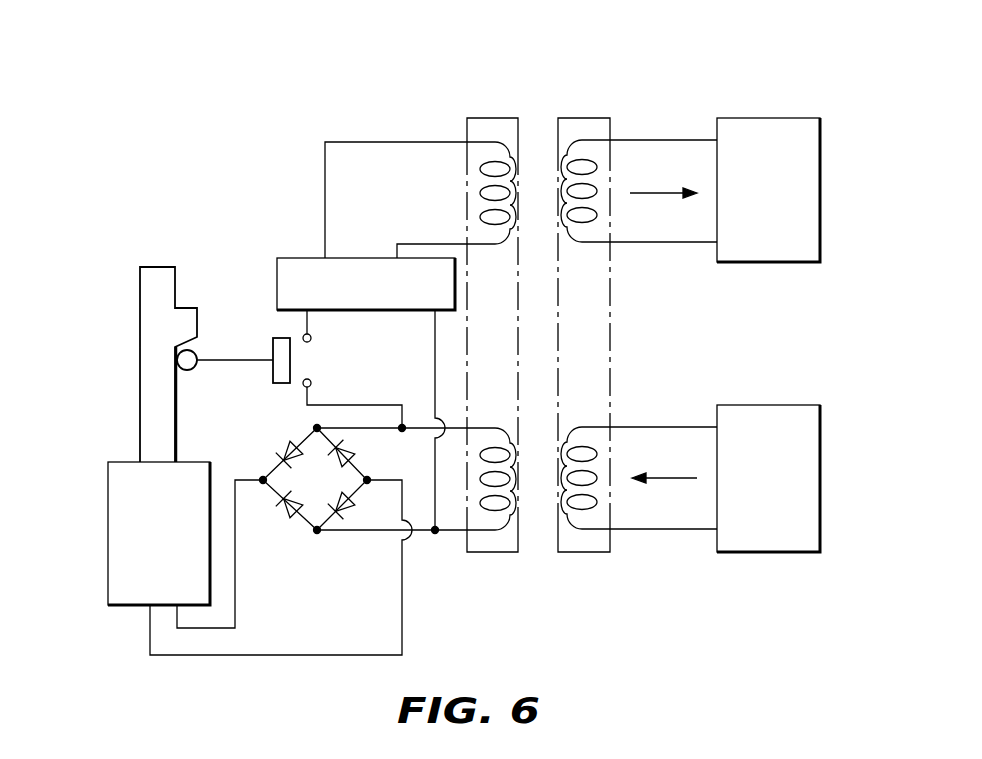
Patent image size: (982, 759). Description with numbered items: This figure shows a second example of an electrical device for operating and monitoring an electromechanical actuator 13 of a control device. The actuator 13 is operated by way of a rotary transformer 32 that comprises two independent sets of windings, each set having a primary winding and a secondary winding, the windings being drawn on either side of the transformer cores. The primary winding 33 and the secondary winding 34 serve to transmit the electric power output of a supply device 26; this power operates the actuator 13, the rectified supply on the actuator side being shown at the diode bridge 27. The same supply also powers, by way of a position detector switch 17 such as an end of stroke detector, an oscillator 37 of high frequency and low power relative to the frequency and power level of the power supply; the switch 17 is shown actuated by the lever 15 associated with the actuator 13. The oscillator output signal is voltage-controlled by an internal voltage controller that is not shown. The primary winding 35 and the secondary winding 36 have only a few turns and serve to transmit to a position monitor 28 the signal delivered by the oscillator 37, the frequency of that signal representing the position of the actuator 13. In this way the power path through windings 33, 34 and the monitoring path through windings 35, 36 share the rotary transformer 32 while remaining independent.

The actuator 13 is at (112, 525).
The lever 15 is at (170, 425).
The position detector switch 17 is at (278, 340).
The supply device 26 is at (783, 495).
The rectifier bridge 27 is at (313, 535).
The position monitor 28 is at (782, 207).
The rotary transformer 32 is at (580, 118).
The primary winding 33 is at (645, 530).
The secondary winding 34 is at (457, 532).
The primary winding 35 is at (325, 180).
The secondary winding 36 is at (665, 243).
The oscillator 37 is at (277, 264).